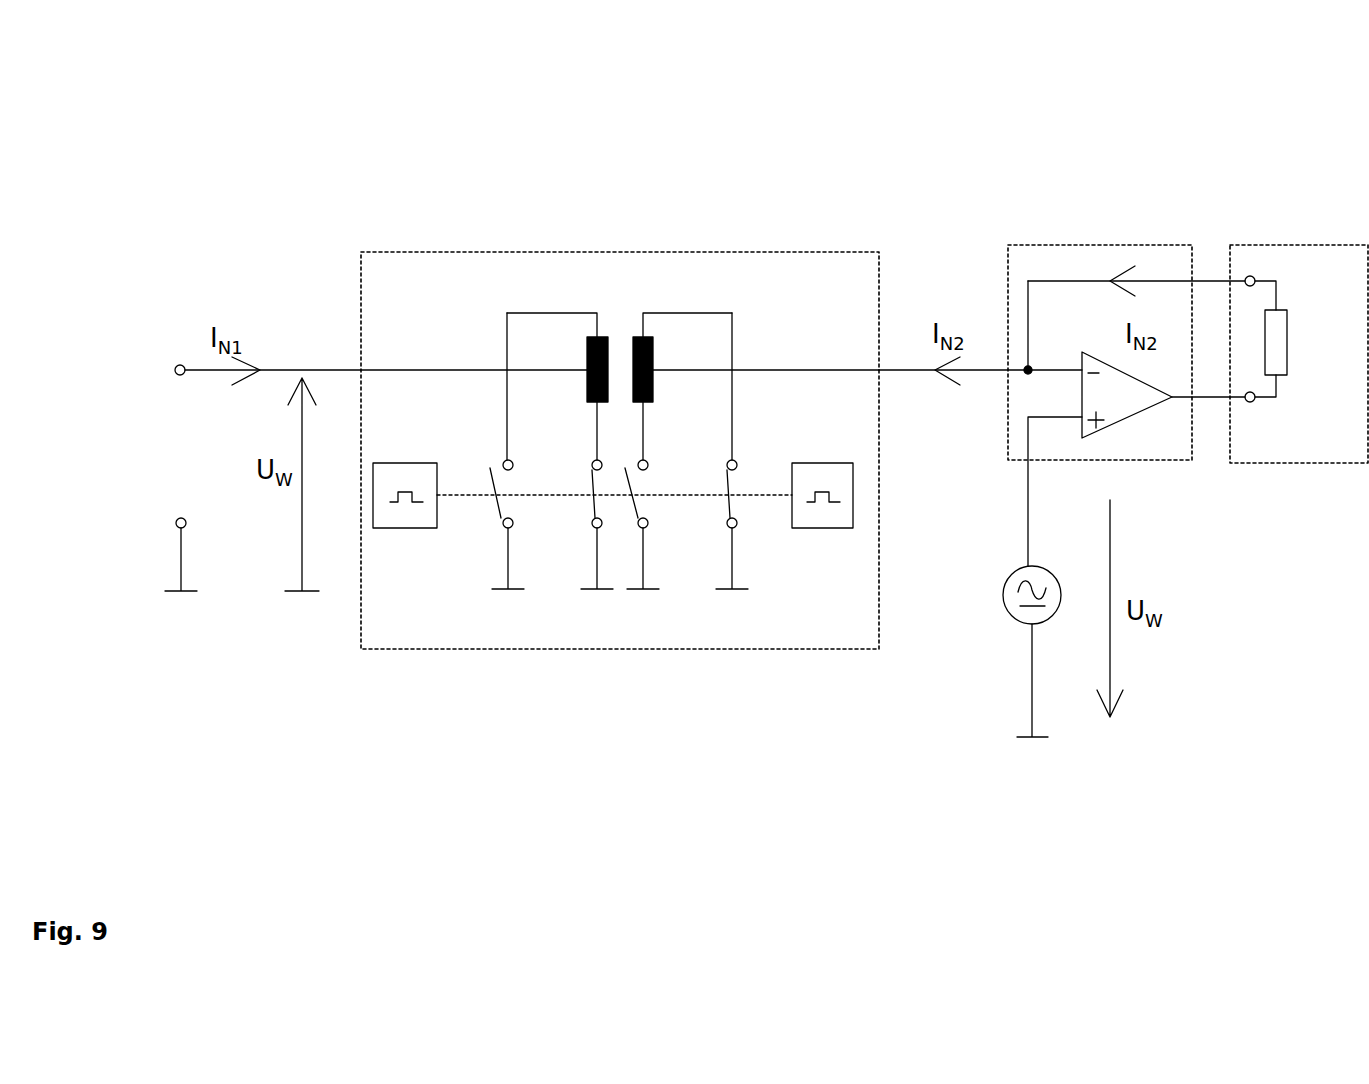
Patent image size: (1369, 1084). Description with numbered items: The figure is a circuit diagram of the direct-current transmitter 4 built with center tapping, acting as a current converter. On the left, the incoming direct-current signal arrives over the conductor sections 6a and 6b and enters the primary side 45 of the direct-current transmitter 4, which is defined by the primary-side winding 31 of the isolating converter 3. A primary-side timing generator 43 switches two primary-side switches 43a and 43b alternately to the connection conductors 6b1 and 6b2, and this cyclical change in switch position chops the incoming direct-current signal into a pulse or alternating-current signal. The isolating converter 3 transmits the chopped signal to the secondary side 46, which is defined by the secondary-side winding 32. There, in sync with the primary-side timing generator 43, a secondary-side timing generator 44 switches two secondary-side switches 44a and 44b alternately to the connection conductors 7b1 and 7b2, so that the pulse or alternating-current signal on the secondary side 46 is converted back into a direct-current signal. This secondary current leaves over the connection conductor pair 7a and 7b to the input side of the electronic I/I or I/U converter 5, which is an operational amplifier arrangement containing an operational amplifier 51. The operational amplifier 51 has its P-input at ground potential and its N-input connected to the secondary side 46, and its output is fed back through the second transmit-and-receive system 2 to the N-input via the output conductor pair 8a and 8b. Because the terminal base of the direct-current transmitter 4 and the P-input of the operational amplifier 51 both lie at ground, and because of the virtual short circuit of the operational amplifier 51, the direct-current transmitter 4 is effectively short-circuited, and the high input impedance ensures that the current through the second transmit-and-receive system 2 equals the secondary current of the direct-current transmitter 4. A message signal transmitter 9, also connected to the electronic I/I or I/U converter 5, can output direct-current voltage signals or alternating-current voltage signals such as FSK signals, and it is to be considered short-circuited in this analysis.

The second transmit-and-receive system 2 is at (1279, 246).
The isolating converter 3 is at (623, 333).
The direct-current transmitter 4 is at (605, 222).
The electronic I/I or I/U converter 5 is at (1072, 215).
The conductor section 6a is at (427, 370).
The conductor section 6b is at (181, 558).
The connection conductor 6b1 is at (488, 386).
The connection conductor 6b2 is at (568, 428).
The connection conductor 7a is at (820, 370).
The connection conductor 7b is at (1030, 663).
The connection conductor 7b1 is at (673, 428).
The connection conductor 7b2 is at (760, 386).
The output conductor 8a is at (1212, 281).
The output conductor 8b is at (1218, 397).
The message signal transmitter 9 is at (1006, 610).
The primary-side winding 31 is at (587, 367).
The secondary-side winding 32 is at (653, 363).
The primary-side timing generator 43 is at (403, 528).
The primary-side switch 43a is at (493, 518).
The primary-side switch 43b is at (587, 510).
The secondary-side timing generator 44 is at (813, 528).
The secondary-side switch 44a is at (660, 515).
The secondary-side switch 44b is at (743, 507).
The primary side 45 is at (378, 437).
The secondary side 46 is at (858, 398).
The operational amplifier 51 is at (1120, 403).